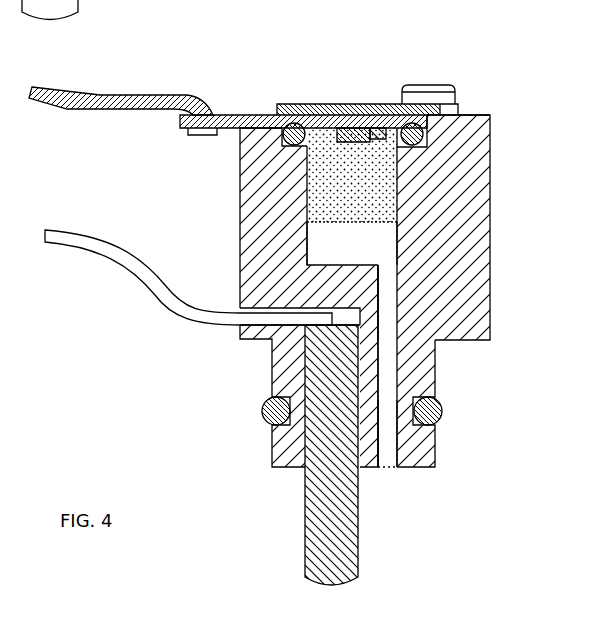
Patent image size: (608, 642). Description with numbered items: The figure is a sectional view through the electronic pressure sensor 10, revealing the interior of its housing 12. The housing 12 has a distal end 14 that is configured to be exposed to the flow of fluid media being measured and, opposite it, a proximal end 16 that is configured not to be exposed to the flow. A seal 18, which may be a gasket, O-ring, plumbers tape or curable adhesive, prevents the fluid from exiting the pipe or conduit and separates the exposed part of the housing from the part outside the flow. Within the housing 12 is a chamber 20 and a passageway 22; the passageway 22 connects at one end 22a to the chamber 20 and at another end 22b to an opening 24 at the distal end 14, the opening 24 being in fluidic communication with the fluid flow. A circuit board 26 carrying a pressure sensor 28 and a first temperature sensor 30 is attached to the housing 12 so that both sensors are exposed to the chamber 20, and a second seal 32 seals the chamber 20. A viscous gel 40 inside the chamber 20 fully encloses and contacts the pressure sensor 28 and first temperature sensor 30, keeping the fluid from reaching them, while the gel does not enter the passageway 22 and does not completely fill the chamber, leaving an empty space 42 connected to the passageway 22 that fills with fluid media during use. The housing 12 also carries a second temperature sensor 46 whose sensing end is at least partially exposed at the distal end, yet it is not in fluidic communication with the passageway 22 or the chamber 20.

The electronic pressure sensor 10 is at (508, 62).
The housing 12 is at (490, 190).
The distal end 14 is at (415, 468).
The proximal end 16 is at (490, 115).
The seal 18 is at (440, 406).
The chamber 20 is at (358, 243).
The passageway 22 is at (388, 334).
The one end of passageway 22a is at (388, 282).
The another end of passageway 22b is at (385, 468).
The opening 24 is at (385, 468).
The circuit board 26 is at (233, 115).
The pressure sensor 28 is at (352, 130).
The first temperature sensor 30 is at (383, 140).
The second seal 32 is at (297, 128).
The viscous gel 40 is at (318, 188).
The empty space 42 is at (323, 247).
The second temperature sensor 46 is at (306, 517).